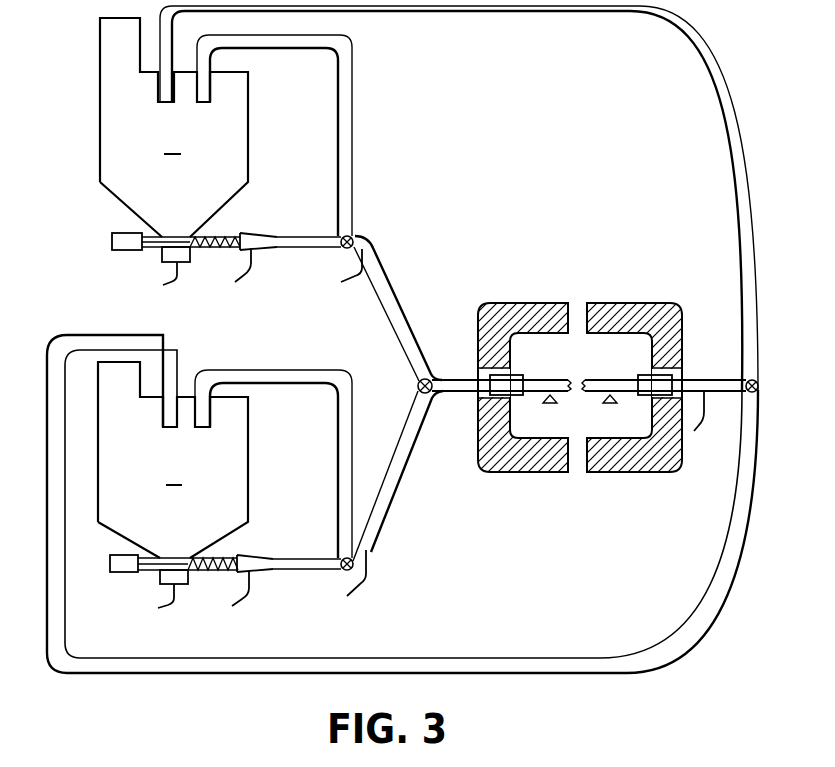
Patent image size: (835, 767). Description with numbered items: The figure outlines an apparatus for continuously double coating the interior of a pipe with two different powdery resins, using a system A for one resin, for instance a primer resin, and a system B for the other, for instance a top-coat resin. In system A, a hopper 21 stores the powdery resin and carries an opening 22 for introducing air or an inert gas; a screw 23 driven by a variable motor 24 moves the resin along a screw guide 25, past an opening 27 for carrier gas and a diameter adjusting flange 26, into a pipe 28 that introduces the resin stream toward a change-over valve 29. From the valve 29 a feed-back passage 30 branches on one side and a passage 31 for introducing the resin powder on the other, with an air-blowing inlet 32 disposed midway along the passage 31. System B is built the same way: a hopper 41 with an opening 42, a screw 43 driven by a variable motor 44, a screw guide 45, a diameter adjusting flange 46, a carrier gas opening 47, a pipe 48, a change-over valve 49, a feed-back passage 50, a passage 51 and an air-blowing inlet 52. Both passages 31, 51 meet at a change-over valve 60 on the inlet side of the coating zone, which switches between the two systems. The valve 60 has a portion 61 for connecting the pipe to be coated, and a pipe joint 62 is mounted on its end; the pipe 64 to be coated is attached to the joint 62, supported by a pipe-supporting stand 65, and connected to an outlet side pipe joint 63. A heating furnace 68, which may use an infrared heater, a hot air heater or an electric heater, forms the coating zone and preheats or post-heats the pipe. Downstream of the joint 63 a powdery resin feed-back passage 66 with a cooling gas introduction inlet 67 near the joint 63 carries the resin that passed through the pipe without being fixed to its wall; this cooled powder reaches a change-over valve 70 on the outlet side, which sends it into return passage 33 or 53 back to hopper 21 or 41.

The hopper 21 is at (100, 97).
The opening for introduction of air or inert gas 22 is at (175, 281).
The screw 23 is at (200, 248).
The variable motor 24 is at (127, 250).
The screw guide 25 is at (216, 236).
The diameter adjusting flange 26 is at (261, 235).
The opening for introduction of carrier gas 27 is at (250, 272).
The pipe for introducing resin stream 28 is at (303, 248).
The change-over valve 29 is at (353, 238).
The feed-back passage 30 is at (353, 135).
The passage for introduction of resin powder 31 is at (402, 308).
The air-blowing inlet 32 is at (356, 275).
The return passage 33 is at (474, 12).
The hopper 41 is at (98, 452).
The opening for introduction of air or inert gas 42 is at (172, 602).
The screw 43 is at (200, 571).
The variable motor 44 is at (118, 572).
The screw guide 45 is at (222, 558).
The diameter adjusting flange 46 is at (262, 557).
The opening for introduction of carrier gas 47 is at (246, 597).
The pipe for introducing resin stream 48 is at (308, 571).
The change-over valve 49 is at (347, 572).
The feed-back passage 50 is at (338, 434).
The passage for introduction of resin powder 51 is at (401, 486).
The air-blowing inlet 52 is at (367, 580).
The return passage 53 is at (486, 658).
The change-over valve 60 is at (432, 392).
The connecting portion 61 is at (457, 380).
The pipe joint 62 is at (514, 380).
The outlet side pipe joint 63 is at (645, 377).
The pipe to be coated 64 is at (570, 393).
The pipe-supporting stand 65 is at (580, 398).
The powdery resin feed-back passage 66 is at (705, 380).
The cooling gas introduction inlet 67 is at (705, 416).
The heating furnace 68 is at (614, 472).
The change-over valve 70 is at (758, 397).